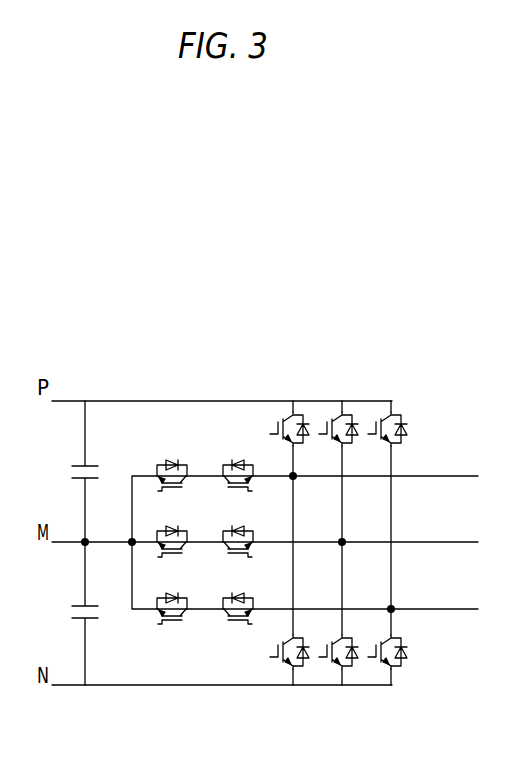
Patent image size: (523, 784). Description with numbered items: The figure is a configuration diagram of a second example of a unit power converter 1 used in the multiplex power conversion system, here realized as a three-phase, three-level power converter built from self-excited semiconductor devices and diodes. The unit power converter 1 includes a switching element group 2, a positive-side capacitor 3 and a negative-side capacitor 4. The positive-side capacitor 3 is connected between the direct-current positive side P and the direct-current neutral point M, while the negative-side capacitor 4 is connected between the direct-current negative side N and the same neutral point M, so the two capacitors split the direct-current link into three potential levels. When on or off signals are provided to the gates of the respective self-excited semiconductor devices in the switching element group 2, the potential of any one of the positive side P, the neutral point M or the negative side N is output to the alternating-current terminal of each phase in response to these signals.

The unit power converter 1 is at (374, 500).
The switching element group 2 is at (306, 381).
The positive-side capacitor 3 is at (74, 466).
The negative-side capacitor 4 is at (74, 618).